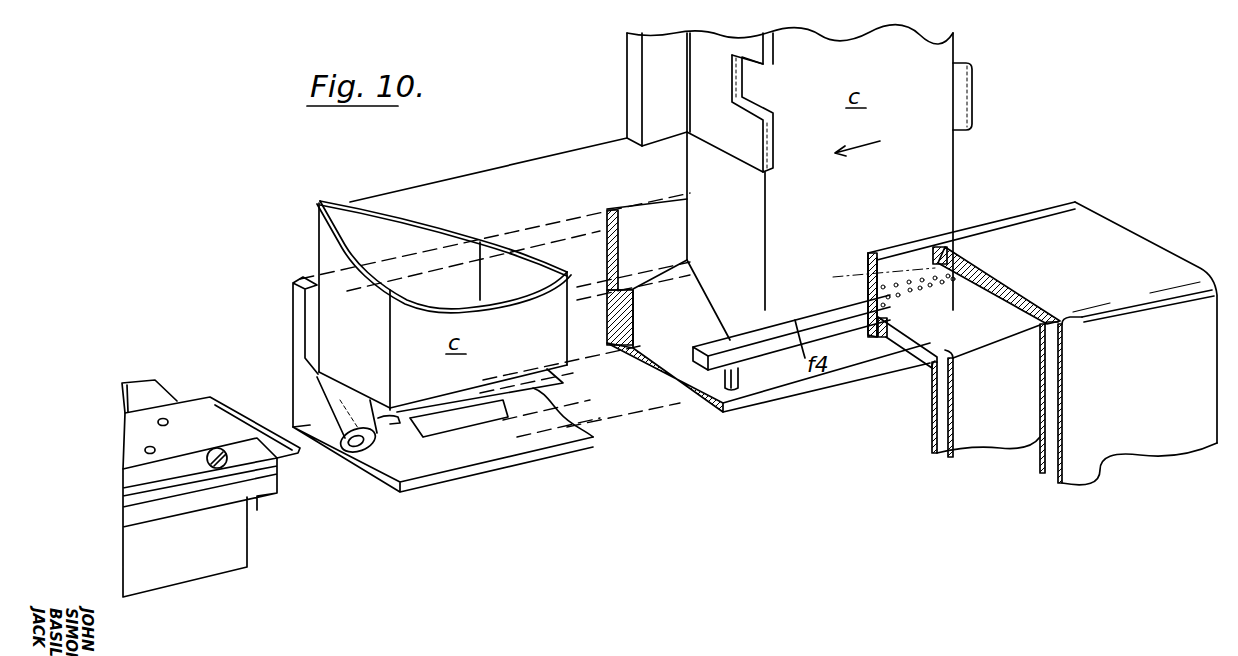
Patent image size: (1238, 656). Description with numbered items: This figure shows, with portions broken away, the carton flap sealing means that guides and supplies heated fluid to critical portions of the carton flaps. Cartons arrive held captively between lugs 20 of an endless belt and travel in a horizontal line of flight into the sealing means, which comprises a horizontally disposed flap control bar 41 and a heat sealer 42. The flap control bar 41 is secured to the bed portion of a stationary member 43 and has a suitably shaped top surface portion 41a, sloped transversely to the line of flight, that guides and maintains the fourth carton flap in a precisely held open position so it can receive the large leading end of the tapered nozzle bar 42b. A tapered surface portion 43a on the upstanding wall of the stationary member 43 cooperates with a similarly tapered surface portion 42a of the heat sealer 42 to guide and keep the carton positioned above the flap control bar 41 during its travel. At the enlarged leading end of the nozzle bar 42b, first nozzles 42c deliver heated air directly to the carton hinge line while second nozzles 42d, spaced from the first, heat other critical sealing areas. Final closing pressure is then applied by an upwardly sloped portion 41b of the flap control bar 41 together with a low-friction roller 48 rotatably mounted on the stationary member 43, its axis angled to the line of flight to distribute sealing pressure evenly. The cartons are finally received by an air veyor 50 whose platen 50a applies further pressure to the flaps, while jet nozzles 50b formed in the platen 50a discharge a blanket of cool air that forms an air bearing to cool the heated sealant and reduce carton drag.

The lugs 20 is at (973, 97).
The flap control bar 41 is at (693, 368).
The top surface portion 41a is at (710, 347).
The upwardly sloped portion 41b is at (396, 420).
The heat sealer 42 is at (1001, 341).
The tapered surface portion 42a is at (855, 258).
The nozzle bar 42b is at (837, 278).
The first nozzles 42c is at (920, 292).
The second nozzles 42d is at (940, 293).
The stationary member 43 is at (753, 407).
The tapered surface portion 43a is at (653, 272).
The roller 48 is at (347, 402).
The air veyor 50 is at (181, 472).
The platen 50a is at (140, 436).
The jet nozzles 50b is at (167, 418).